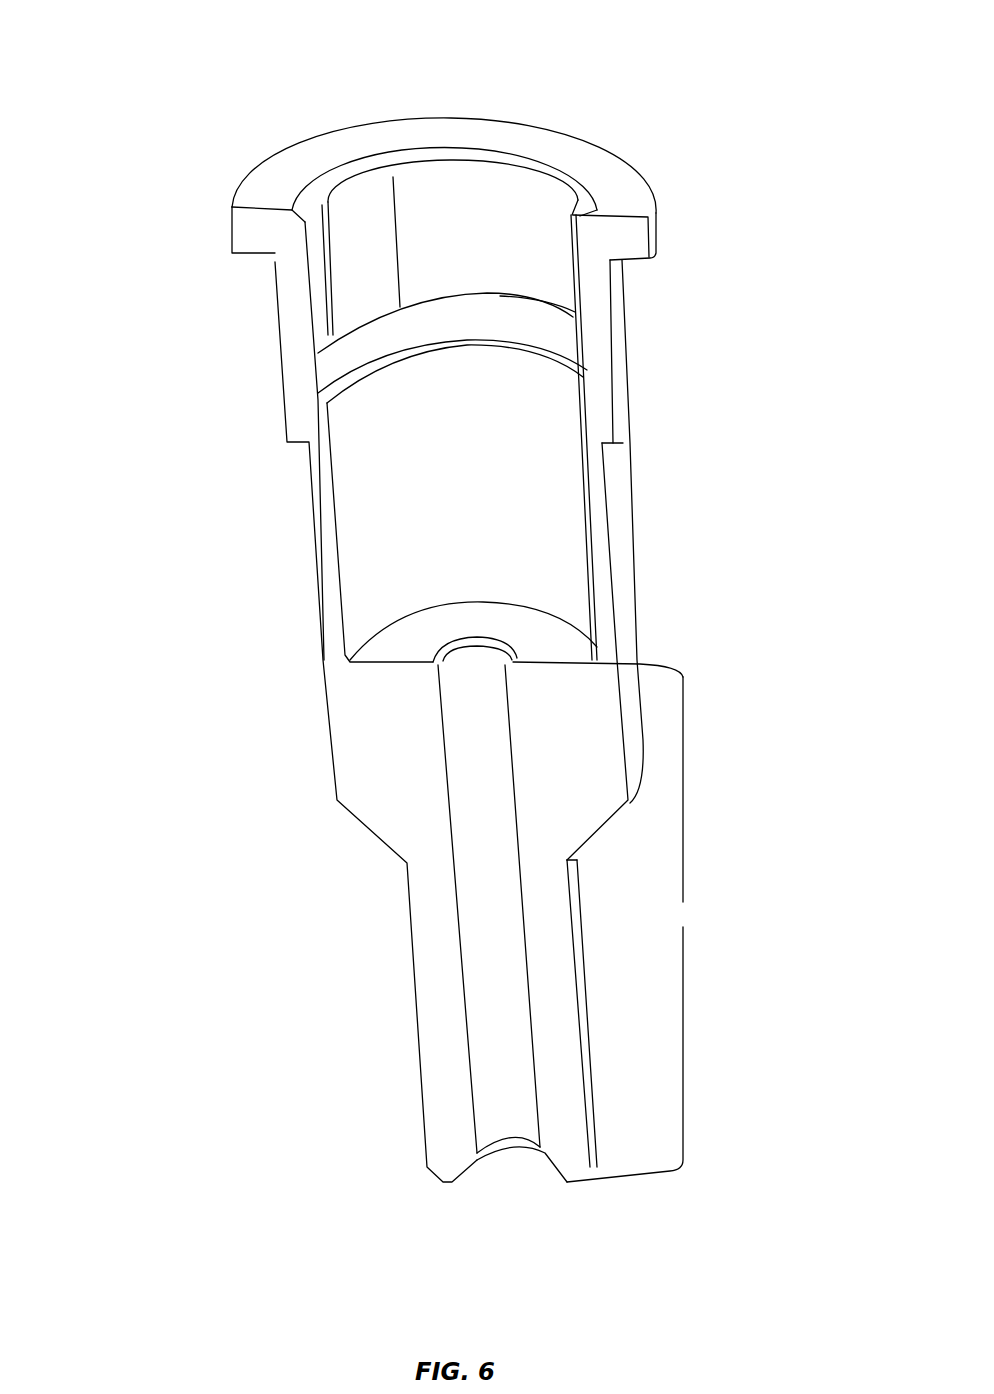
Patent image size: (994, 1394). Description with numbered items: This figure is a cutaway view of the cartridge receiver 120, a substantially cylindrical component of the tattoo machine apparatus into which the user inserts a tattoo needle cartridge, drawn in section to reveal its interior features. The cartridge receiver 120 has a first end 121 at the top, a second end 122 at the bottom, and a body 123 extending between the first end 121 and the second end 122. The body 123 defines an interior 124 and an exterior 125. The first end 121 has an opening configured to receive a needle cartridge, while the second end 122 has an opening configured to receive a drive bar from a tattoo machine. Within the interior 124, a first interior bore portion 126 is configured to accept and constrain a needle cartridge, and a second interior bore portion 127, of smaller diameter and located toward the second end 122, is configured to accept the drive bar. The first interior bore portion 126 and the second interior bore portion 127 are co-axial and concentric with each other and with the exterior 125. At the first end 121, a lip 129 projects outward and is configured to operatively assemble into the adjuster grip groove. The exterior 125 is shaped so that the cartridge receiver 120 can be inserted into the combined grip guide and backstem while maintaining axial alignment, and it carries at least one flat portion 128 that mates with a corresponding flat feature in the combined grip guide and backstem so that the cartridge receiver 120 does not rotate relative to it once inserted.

The cartridge receiver 120 is at (62, 28).
The first end 121 is at (324, 133).
The second end 122 is at (586, 1188).
The body 123 is at (370, 727).
The interior 124 is at (513, 463).
The exterior 125 is at (640, 323).
The first interior bore portion 126 is at (296, 234).
The second interior bore portion 127 is at (683, 902).
The flat portion 128 is at (630, 514).
The lip 129 is at (637, 224).